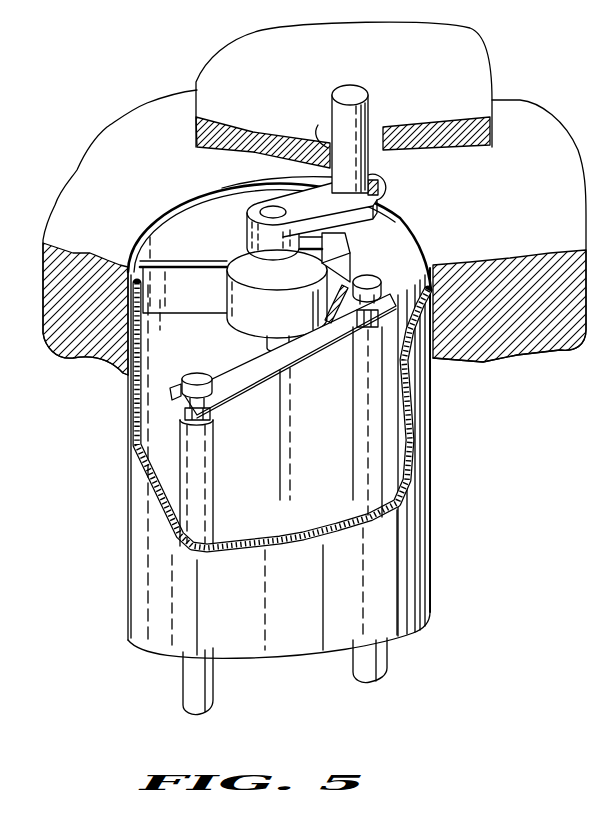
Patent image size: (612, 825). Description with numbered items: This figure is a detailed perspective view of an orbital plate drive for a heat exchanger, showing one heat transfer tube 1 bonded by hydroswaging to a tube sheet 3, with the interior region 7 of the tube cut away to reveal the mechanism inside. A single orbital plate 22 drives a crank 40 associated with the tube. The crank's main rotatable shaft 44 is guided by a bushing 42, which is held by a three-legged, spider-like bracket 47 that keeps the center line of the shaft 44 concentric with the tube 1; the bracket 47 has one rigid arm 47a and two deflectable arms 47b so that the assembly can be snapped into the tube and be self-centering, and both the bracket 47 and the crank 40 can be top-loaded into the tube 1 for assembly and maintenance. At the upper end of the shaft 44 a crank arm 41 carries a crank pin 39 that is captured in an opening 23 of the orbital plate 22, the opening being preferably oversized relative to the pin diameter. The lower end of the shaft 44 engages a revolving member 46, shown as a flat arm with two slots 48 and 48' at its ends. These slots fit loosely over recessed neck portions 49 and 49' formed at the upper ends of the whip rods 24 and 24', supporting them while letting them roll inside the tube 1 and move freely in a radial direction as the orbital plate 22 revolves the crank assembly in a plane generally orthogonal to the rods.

The heat transfer tube 1 is at (422, 506).
The tube sheet 3 is at (543, 223).
The housing interior 7 is at (293, 478).
The orbital plate 22 is at (450, 76).
The opening 23 is at (322, 130).
The rod 24 is at (222, 681).
The rod 24' is at (345, 671).
The crank pin 39 is at (344, 90).
The crank 40 is at (393, 190).
The crank arm 41 is at (300, 176).
The bushing 42 is at (243, 252).
The main rotatable shaft 44 is at (259, 212).
The revolving member 46 is at (244, 366).
The spider-like bracket 47 is at (183, 228).
The rigid arm 47a is at (200, 292).
The deflectable arm 47b is at (350, 256).
The slot 48 is at (218, 402).
The slot 48' is at (399, 278).
The recessed neck portion 49 is at (148, 459).
The recessed neck portion 49' is at (344, 396).